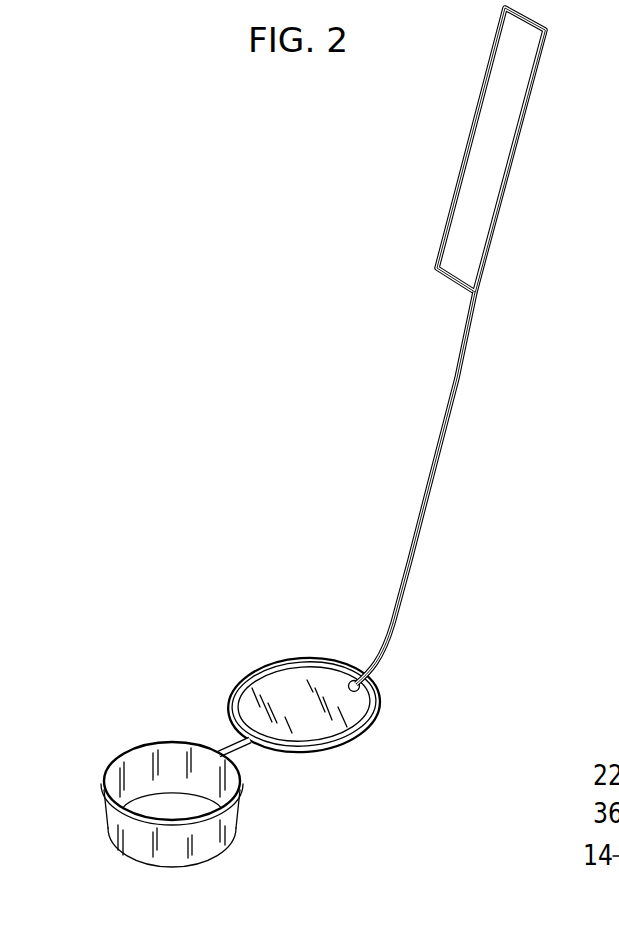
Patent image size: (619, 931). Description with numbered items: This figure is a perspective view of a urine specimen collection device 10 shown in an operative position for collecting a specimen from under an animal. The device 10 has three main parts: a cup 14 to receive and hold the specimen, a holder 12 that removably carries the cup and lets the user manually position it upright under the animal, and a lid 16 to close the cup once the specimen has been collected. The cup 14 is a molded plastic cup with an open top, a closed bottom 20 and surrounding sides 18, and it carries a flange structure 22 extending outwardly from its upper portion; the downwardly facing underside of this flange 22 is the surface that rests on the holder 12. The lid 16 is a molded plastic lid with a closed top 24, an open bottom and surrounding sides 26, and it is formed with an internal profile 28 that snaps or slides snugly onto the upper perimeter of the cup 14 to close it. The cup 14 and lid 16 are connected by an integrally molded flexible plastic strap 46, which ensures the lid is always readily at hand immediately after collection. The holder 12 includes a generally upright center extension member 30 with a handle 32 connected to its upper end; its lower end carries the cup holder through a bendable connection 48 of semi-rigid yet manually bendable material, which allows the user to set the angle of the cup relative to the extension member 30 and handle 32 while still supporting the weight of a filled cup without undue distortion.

The specimen collection device 10 is at (233, 438).
The holder 12 is at (431, 487).
The cup 14 is at (237, 820).
The lid 16 is at (357, 742).
The surrounding sides 18 is at (108, 832).
The closed bottom 20 is at (200, 807).
The flange structure 22 is at (107, 780).
The closed top 24 is at (282, 682).
The surrounding sides 26 is at (371, 722).
The internal profile 28 is at (373, 690).
The center extension member 30 is at (458, 378).
The handle 32 is at (525, 122).
The flexible plastic strap 46 is at (232, 748).
The bendable connection 48 is at (385, 650).